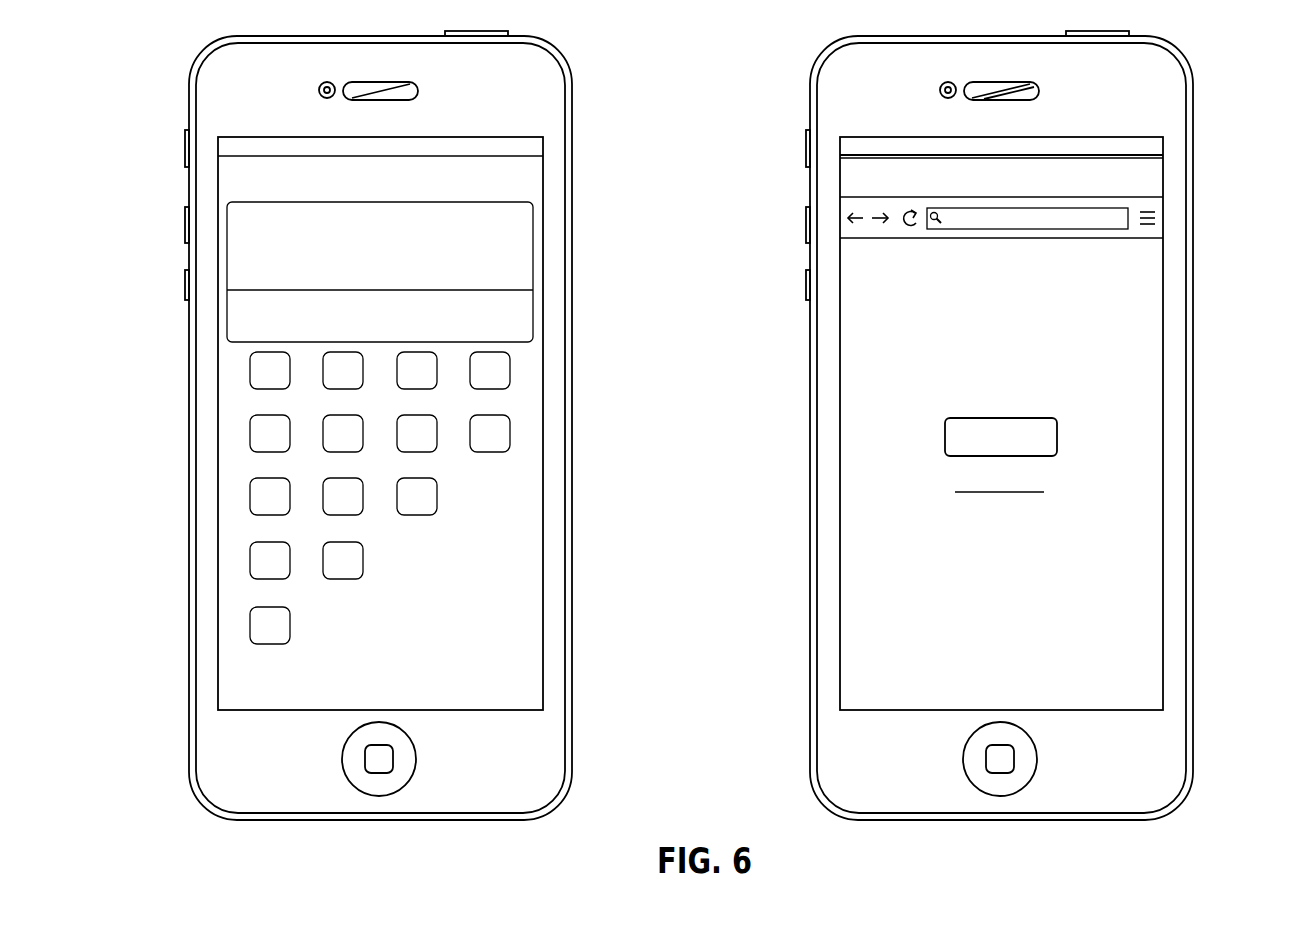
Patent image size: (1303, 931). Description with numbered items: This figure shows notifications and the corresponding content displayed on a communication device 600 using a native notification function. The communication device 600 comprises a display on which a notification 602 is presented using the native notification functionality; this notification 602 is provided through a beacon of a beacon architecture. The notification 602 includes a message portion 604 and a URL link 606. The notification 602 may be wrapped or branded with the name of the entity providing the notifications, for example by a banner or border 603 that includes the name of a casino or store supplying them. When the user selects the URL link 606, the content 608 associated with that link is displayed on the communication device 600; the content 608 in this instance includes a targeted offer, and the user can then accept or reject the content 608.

The communication device 600 is at (590, 115).
The notification 602 is at (231, 203).
The banner or border 603 is at (525, 301).
The message portion 604 is at (220, 245).
The URL link 606 is at (525, 228).
The content 608 is at (1177, 242).